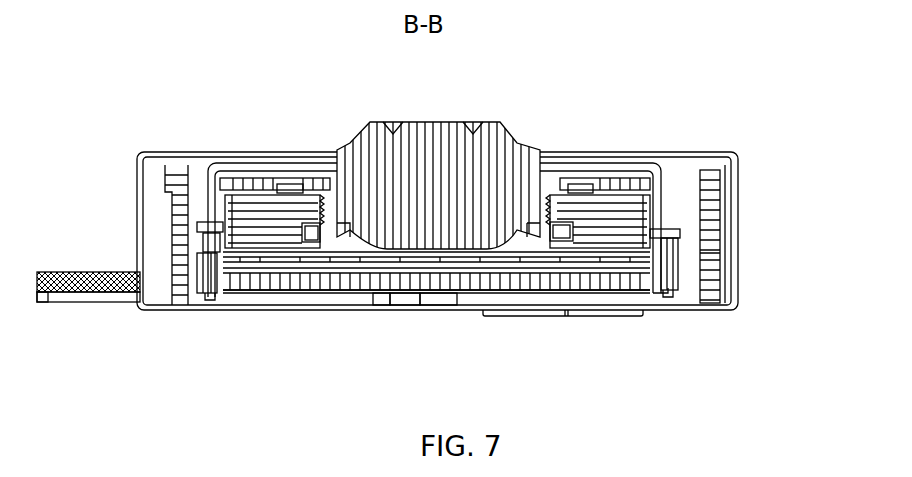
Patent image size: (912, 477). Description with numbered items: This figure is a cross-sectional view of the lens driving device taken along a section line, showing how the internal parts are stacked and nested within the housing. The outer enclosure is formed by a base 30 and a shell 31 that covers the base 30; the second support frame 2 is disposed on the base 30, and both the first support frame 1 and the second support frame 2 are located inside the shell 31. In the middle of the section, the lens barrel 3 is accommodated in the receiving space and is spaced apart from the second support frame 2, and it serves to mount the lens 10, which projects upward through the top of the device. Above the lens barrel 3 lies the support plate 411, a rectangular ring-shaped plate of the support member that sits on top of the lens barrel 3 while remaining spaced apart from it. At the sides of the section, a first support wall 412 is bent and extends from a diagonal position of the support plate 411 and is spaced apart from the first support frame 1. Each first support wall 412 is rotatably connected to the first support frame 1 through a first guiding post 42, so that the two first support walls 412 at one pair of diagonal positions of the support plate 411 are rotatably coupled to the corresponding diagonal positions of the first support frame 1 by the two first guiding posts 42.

The first support frame 1 is at (615, 203).
The second support frame 2 is at (710, 287).
The lens barrel 3 is at (529, 182).
The lens 10 is at (378, 150).
The base 30 is at (232, 308).
The shell 31 is at (233, 152).
The first guiding post 42 is at (673, 233).
The support plate 411 is at (640, 160).
The first support wall 412 is at (665, 223).